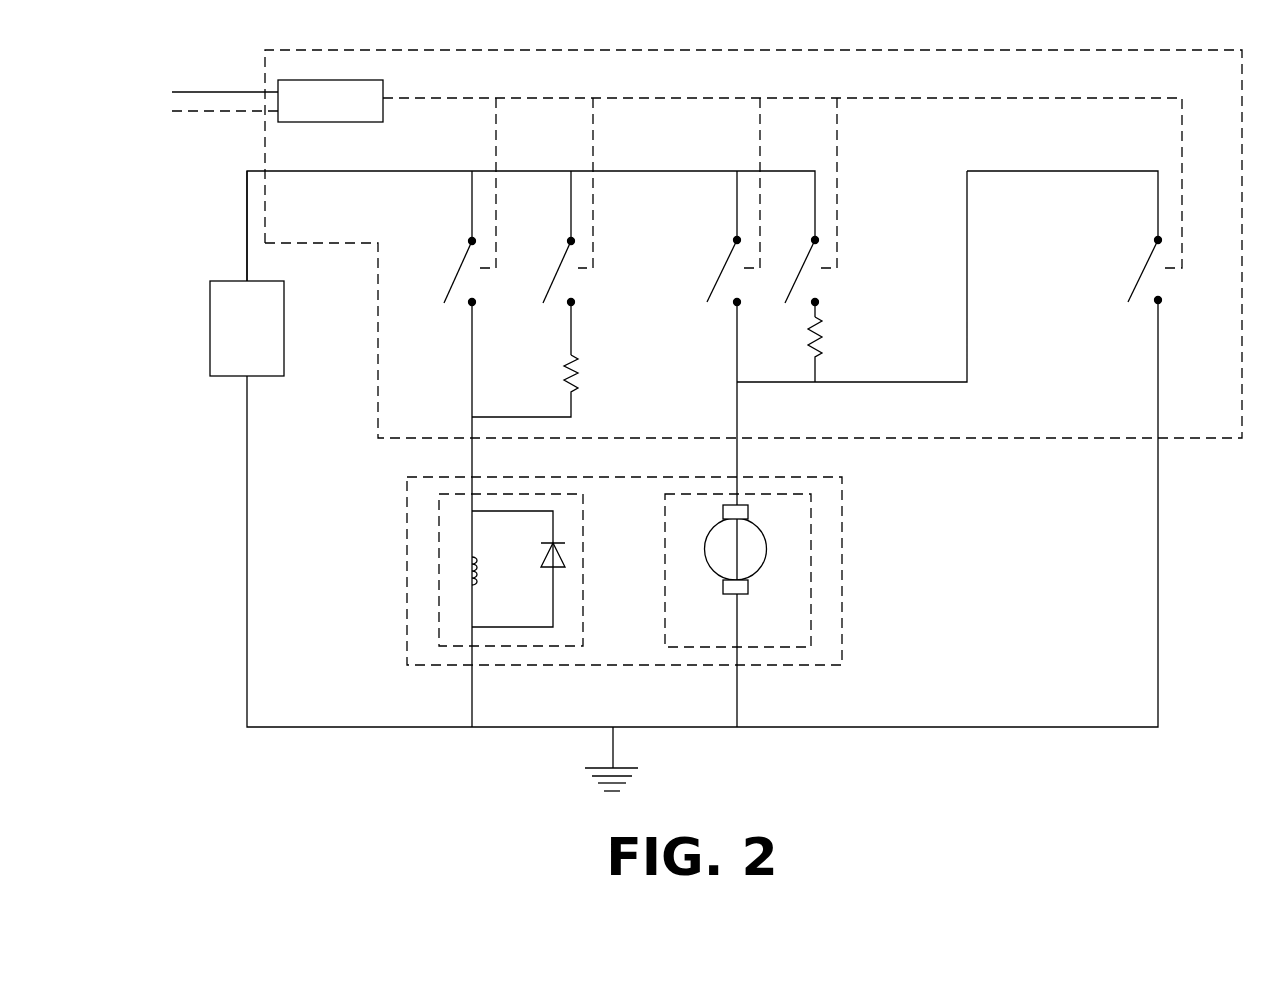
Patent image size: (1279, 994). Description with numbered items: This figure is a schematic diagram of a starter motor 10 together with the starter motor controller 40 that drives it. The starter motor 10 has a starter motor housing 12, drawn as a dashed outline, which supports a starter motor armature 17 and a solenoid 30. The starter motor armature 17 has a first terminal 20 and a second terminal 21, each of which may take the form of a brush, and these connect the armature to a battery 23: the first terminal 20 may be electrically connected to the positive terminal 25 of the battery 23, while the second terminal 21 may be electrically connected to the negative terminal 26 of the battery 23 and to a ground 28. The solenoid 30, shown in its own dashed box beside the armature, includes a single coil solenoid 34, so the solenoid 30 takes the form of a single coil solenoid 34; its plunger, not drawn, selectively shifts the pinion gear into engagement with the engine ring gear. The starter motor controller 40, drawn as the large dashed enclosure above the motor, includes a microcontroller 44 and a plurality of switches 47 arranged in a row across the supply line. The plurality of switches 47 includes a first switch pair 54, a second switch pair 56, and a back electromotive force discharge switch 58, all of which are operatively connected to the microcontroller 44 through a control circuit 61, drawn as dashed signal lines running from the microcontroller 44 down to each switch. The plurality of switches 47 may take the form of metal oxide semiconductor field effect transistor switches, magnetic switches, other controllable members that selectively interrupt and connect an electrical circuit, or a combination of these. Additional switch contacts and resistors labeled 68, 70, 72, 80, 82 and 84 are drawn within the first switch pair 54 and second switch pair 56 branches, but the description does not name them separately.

The starter motor 10 is at (885, 654).
The starter motor housing 12 is at (815, 530).
The starter motor armature 17 is at (784, 588).
The first terminal 20 is at (722, 512).
The second terminal 21 is at (722, 588).
The battery 23 is at (191, 312).
The positive terminal 25 is at (247, 281).
The negative terminal 26 is at (247, 376).
The ground 28 is at (614, 750).
The solenoid 30 is at (430, 528).
The single coil solenoid 34 is at (470, 580).
The starter motor controller 40 is at (1234, 458).
The microcontroller 44 is at (317, 66).
The plurality of switches 47 is at (388, 155).
The first switch pair 54 is at (595, 310).
The second switch pair 56 is at (843, 287).
The back electromotive force discharge switch 58 is at (1110, 318).
The control circuit 61 is at (910, 98).
The switch contact 68 is at (463, 270).
The switch contact 70 is at (562, 270).
The resistor 72 is at (578, 377).
The switch contact 80 is at (722, 278).
The switch contact 82 is at (787, 288).
The resistor 84 is at (823, 343).